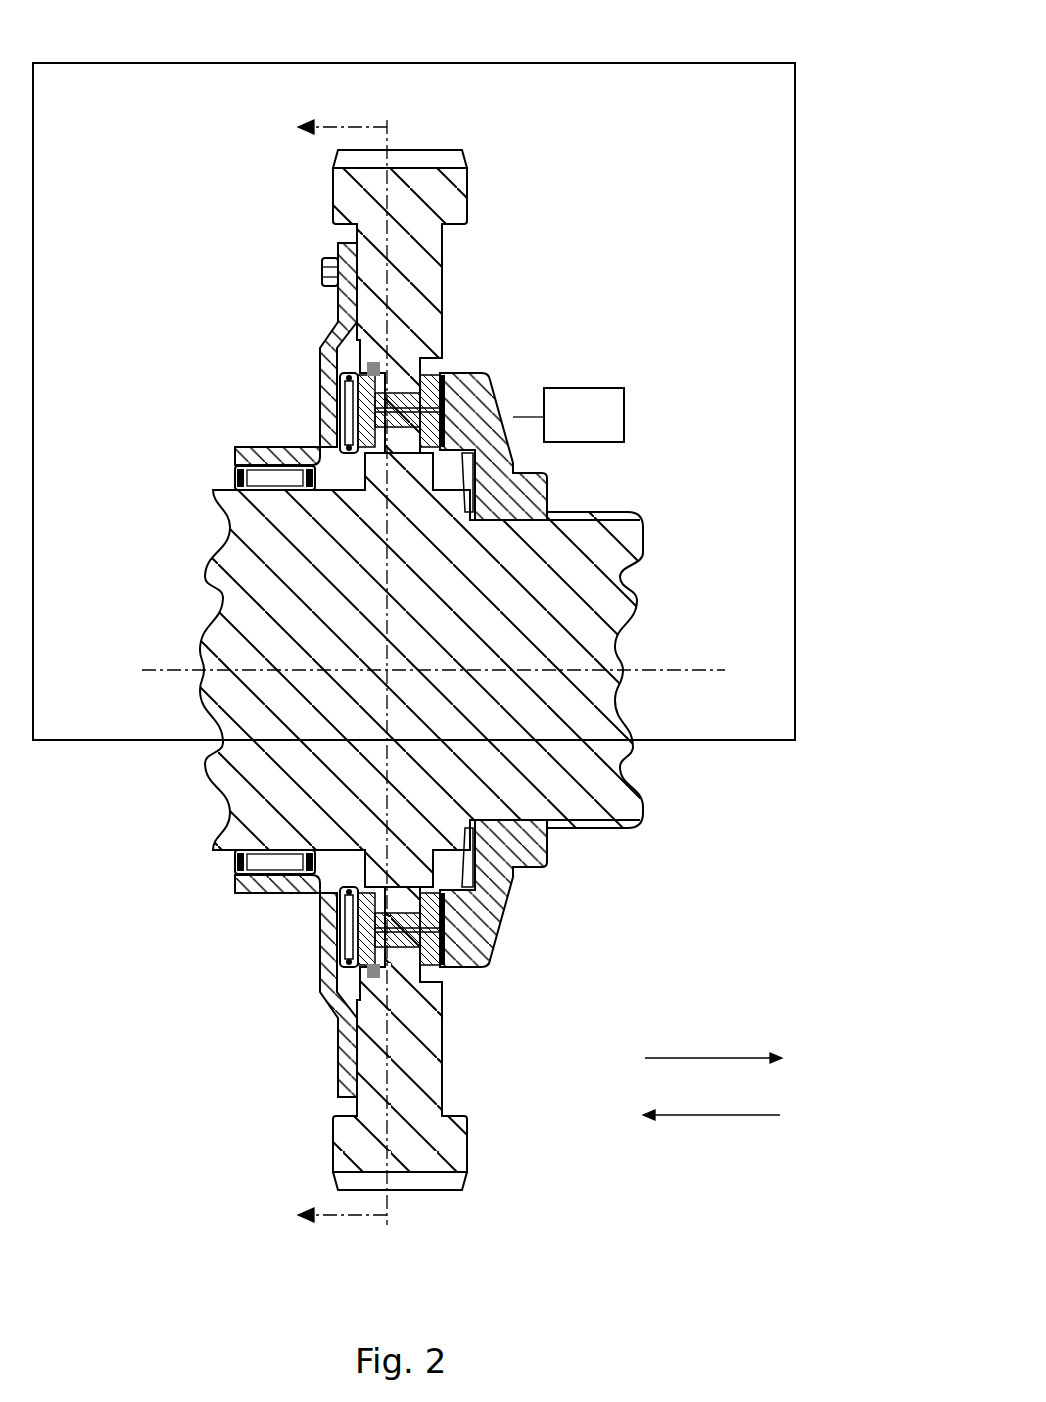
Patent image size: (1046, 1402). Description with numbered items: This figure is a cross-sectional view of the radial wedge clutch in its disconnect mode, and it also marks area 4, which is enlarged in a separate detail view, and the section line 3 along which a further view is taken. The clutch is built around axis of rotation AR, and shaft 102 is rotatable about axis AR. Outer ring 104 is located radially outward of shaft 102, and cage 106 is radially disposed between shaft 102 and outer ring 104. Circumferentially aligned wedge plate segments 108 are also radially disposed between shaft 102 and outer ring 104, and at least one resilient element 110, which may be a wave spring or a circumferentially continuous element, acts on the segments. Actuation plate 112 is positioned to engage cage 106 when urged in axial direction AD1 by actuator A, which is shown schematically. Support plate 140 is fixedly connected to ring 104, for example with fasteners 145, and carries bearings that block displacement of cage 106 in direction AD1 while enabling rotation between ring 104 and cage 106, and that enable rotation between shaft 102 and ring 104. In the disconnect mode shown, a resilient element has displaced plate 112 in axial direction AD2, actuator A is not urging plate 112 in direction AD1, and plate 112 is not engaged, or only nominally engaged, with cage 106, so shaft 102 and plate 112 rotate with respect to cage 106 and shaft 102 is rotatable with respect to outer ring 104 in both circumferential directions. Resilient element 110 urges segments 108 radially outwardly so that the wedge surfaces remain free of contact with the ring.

The area 4 is at (797, 118).
The shaft 102 is at (647, 538).
The outer ring 104 is at (471, 196).
The cage 106 is at (441, 368).
The wedge plate segments 108 is at (345, 347).
The resilient element 110 is at (368, 975).
The actuation plate 112 is at (507, 910).
The support plate 140 is at (356, 993).
The fasteners 145 is at (330, 256).
The actuator A is at (596, 388).
The axis of rotation AR is at (180, 672).
The axial direction AD1 is at (710, 1115).
The axial direction AD2 is at (688, 1058).
The section line 3- 3 is at (331, 677).